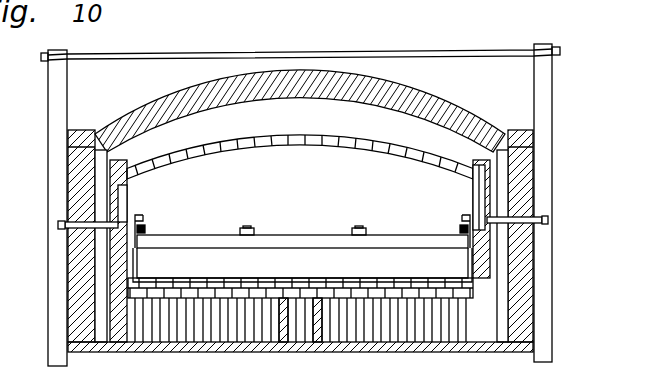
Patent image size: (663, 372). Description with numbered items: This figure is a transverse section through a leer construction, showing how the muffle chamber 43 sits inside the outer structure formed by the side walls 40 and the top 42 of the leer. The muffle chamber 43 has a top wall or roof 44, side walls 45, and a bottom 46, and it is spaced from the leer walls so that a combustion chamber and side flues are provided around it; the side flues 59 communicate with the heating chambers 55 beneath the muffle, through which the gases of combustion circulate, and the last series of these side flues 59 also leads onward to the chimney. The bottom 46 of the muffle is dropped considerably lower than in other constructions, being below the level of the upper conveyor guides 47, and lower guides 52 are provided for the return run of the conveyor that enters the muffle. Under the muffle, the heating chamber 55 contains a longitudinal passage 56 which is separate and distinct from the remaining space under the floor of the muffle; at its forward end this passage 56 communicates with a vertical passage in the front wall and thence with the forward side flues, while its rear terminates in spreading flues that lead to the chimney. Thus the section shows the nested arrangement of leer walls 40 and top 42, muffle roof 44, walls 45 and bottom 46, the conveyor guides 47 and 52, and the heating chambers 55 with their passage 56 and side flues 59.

The side walls 40 is at (72, 201).
The top 42 is at (407, 90).
The muffle chamber 43 is at (302, 217).
The top wall or roof 44 is at (309, 134).
The side walls 45 is at (114, 204).
The bottom 46 is at (260, 283).
The upper conveyor guides 47 is at (146, 222).
The lower guides 52 is at (138, 282).
The heating chambers 55 is at (300, 320).
The longitudinal passage 56 is at (302, 328).
The side flues 59 is at (108, 166).